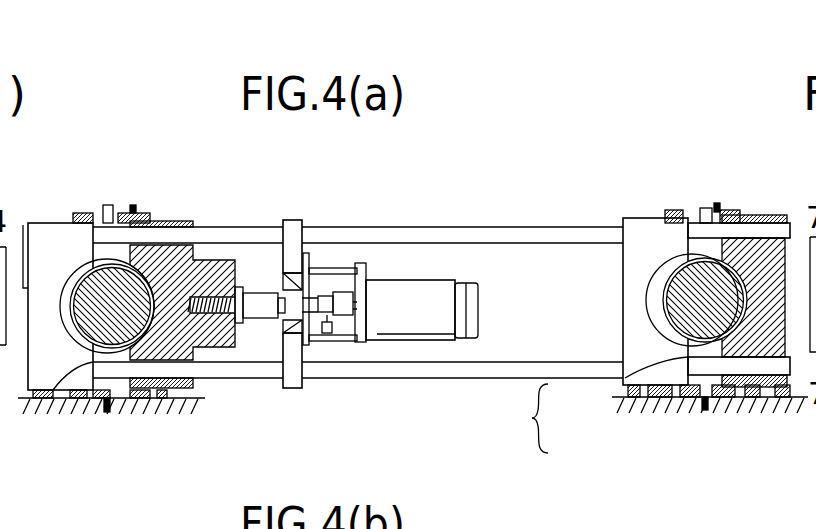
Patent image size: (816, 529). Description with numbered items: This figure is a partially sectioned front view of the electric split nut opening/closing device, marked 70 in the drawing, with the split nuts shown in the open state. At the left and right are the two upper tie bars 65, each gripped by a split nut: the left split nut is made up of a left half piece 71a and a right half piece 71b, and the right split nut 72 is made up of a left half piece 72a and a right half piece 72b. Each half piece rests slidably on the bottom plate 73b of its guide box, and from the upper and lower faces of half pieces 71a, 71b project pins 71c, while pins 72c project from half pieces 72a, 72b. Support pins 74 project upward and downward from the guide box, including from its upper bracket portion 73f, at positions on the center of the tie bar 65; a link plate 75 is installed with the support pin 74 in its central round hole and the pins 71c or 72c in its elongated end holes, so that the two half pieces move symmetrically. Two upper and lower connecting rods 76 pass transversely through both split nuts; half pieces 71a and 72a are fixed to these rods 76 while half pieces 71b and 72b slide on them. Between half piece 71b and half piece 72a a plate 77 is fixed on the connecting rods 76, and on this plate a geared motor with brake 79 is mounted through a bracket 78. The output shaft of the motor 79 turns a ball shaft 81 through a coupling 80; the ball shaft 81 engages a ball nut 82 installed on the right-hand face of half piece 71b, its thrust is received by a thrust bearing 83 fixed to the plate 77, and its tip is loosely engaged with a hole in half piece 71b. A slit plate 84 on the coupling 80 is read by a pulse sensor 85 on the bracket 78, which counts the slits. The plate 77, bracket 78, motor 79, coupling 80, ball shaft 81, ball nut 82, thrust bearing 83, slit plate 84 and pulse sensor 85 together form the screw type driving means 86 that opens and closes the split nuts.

The tie bar 65 is at (78, 266).
The tension adjusting device 70 is at (527, 186).
The left half piece of the left split nut 71a is at (26, 378).
The right half piece of the left split nut 71b is at (53, 392).
The pin 71c is at (83, 214).
The right split nut 72 is at (522, 418).
The left half piece of the right split nut 72a is at (621, 345).
The right half piece of the right split nut 72b is at (623, 386).
The pin 72c is at (680, 212).
The bottom plate 73b is at (173, 407).
The bracket portion 73f is at (108, 205).
The support pin 74 is at (133, 205).
The link plate 75 is at (183, 226).
The connecting rod 76 is at (572, 360).
The plate 77 is at (288, 221).
The bracket 78 is at (362, 272).
The geared motor with brake 79 is at (440, 278).
The coupling 80 is at (337, 283).
The ball shaft 81 is at (286, 322).
The ball nut 82 is at (263, 322).
The thrust bearing 83 is at (310, 347).
The slit plate 84 is at (330, 318).
The pulse sensor 85 is at (338, 336).
The screw type driving means 86 is at (322, 257).